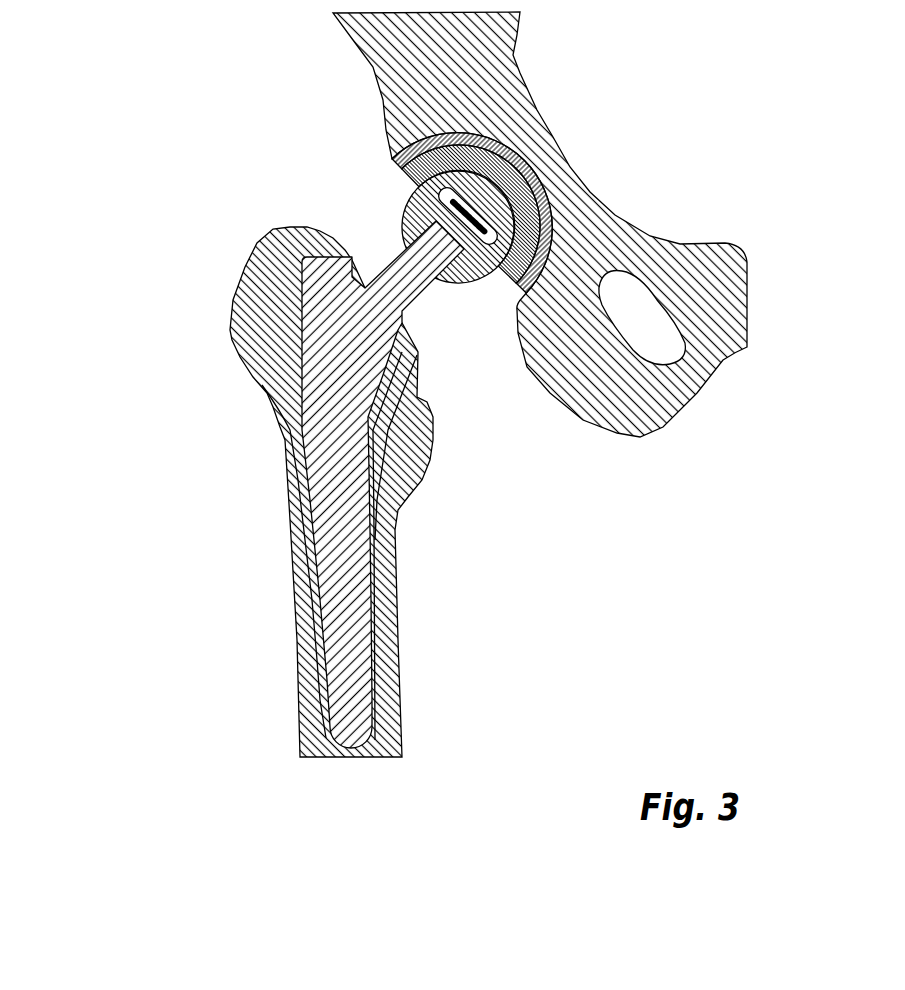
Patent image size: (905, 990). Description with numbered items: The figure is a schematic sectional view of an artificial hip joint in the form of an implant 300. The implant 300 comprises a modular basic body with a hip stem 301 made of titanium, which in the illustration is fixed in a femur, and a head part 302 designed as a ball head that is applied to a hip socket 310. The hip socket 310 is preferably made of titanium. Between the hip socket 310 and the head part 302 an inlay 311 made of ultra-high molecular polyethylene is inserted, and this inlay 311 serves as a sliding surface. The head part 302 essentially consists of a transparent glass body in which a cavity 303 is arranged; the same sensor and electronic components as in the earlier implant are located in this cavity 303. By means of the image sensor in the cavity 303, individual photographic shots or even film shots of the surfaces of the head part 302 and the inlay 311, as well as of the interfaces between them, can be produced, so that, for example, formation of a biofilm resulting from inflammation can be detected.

The implant 300 is at (216, 238).
The hip stem 301 is at (352, 582).
The head part 302 is at (416, 207).
The cavity 303 is at (491, 237).
The hip socket 310 is at (531, 276).
The inlay 311 is at (481, 165).